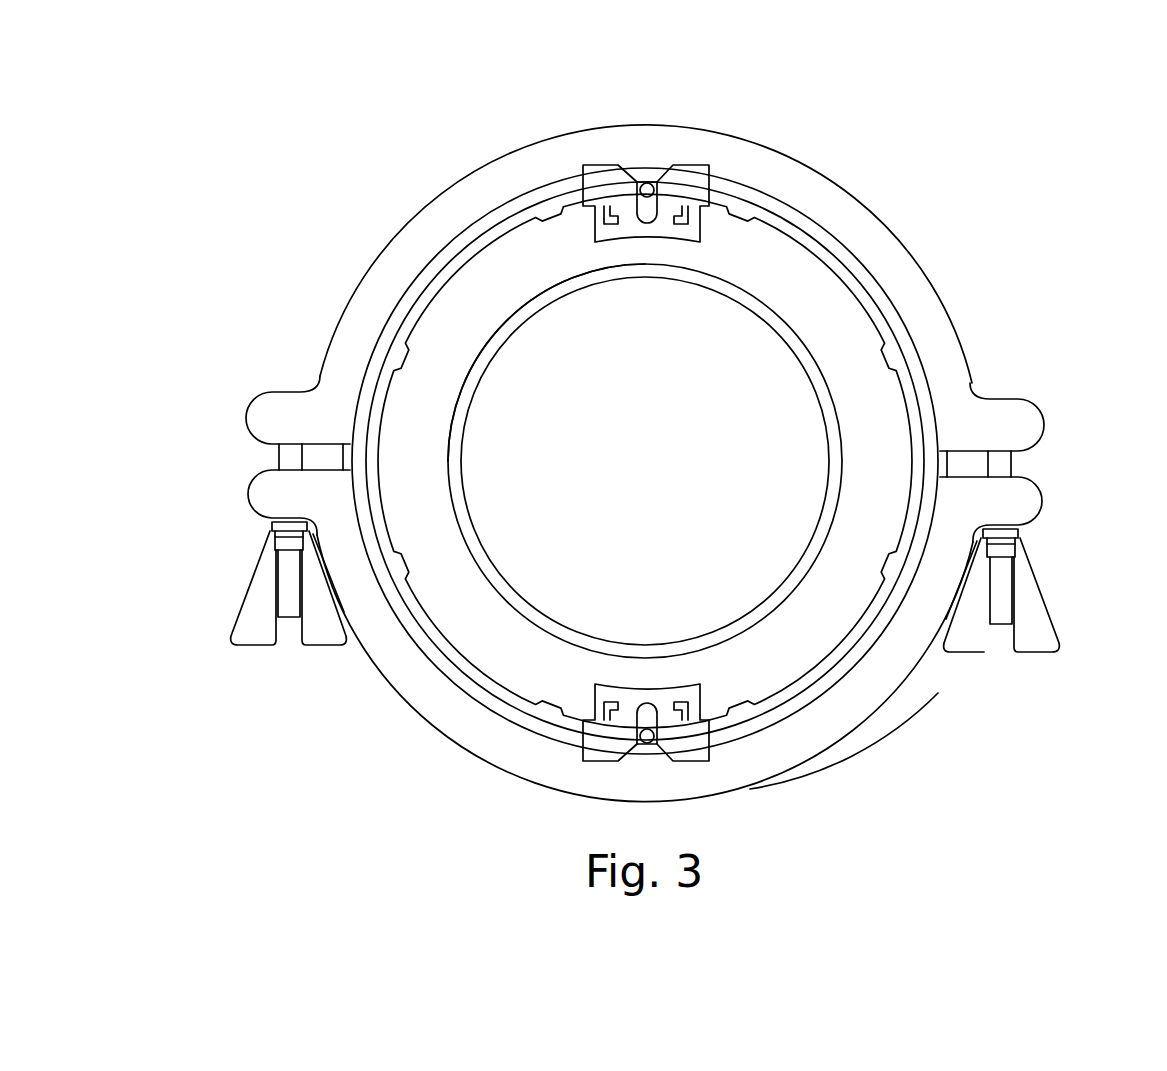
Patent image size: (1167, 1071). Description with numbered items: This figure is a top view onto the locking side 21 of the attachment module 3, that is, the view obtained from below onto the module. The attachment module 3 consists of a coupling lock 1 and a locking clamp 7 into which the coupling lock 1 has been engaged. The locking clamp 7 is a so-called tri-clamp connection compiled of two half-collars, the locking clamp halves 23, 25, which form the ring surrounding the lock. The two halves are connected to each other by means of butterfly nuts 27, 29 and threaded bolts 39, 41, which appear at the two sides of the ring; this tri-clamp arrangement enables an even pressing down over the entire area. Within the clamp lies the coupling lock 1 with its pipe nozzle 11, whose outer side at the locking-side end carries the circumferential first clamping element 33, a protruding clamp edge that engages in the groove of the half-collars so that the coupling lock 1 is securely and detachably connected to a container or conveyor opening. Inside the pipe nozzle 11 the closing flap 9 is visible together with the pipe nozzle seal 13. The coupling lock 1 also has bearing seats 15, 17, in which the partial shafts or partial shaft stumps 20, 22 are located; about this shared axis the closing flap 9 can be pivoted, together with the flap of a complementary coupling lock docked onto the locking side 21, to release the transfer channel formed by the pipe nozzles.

The coupling lock 1 is at (815, 285).
The attachment module 3 is at (780, 118).
The locking clamp 7 is at (458, 720).
The closing flap 9 is at (790, 405).
The pipe nozzle 11 is at (432, 643).
The pipe nozzle seal 13 is at (827, 613).
The bearing seat 15 is at (688, 742).
The bearing seat 17 is at (697, 183).
The partial shaft 20 is at (633, 748).
The locking side 21 is at (495, 398).
The partial shaft 22 is at (628, 217).
The locking clamp half 23 is at (815, 197).
The locking clamp half 25 is at (808, 733).
The butterfly nut 27 is at (1033, 633).
The butterfly nut 29 is at (248, 630).
The first clamping element 33 is at (287, 460).
The threaded bolt 39 is at (292, 453).
The threaded bolt 41 is at (1013, 461).